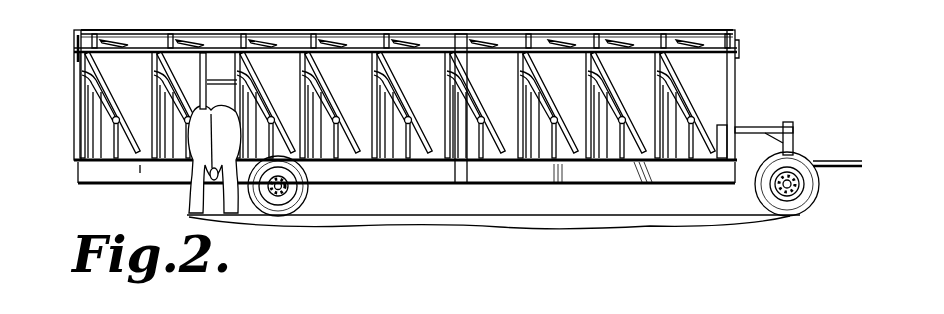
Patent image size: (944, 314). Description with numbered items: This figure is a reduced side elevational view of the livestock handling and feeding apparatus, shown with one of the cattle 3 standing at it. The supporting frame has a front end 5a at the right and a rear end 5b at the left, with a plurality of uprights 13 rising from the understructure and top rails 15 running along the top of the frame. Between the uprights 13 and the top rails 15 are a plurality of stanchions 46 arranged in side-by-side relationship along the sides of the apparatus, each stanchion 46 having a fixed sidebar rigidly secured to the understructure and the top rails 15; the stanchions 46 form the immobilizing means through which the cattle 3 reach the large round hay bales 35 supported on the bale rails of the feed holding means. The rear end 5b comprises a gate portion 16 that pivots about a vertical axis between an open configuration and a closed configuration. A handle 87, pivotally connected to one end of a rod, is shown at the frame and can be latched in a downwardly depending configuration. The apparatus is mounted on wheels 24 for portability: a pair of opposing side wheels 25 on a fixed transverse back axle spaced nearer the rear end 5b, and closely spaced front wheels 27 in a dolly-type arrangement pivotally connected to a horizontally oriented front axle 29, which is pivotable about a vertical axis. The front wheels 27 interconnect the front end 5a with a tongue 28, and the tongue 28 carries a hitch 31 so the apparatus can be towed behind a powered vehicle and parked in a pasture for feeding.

The handle 87 is at (76, 47).
The uprights 13 is at (75, 99).
The rear end 5b is at (78, 172).
The front end 5a is at (736, 108).
The cattle 3 is at (138, 22).
The large round hay bales 35 is at (209, 78).
The top rails 15 is at (405, 48).
The stanchions 46 is at (570, 24).
The tongue 28 is at (812, 157).
The hitch 31 is at (846, 160).
The gate portion 16 is at (803, 200).
The front wheels 27 is at (817, 185).
The front axle 29 is at (775, 195).
The side wheels 25 is at (307, 193).
The wheels 24 is at (293, 217).